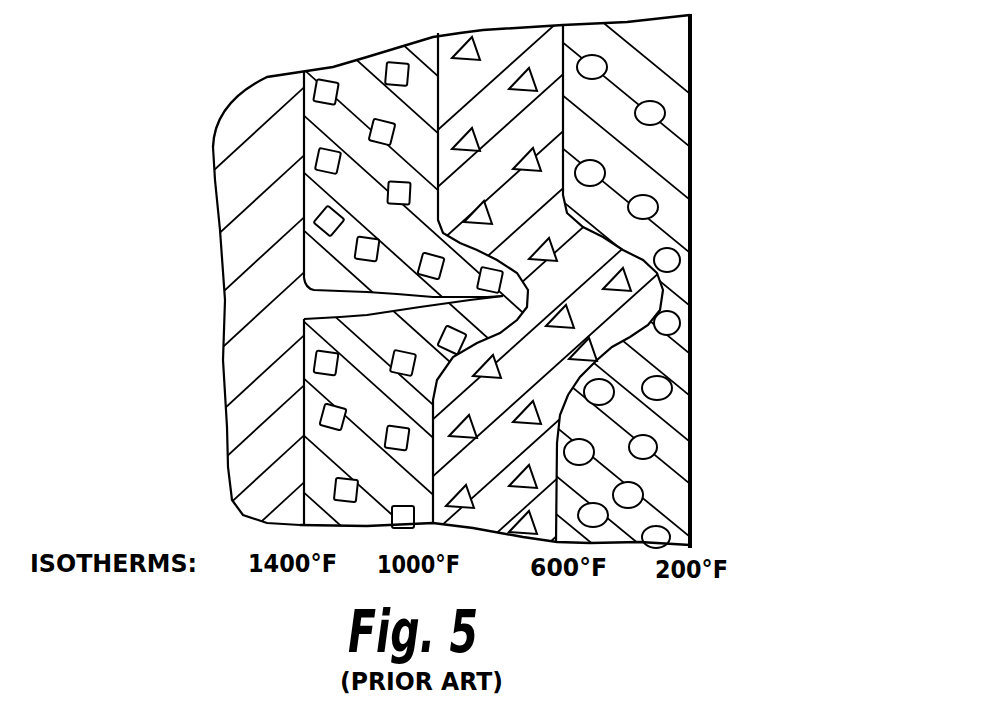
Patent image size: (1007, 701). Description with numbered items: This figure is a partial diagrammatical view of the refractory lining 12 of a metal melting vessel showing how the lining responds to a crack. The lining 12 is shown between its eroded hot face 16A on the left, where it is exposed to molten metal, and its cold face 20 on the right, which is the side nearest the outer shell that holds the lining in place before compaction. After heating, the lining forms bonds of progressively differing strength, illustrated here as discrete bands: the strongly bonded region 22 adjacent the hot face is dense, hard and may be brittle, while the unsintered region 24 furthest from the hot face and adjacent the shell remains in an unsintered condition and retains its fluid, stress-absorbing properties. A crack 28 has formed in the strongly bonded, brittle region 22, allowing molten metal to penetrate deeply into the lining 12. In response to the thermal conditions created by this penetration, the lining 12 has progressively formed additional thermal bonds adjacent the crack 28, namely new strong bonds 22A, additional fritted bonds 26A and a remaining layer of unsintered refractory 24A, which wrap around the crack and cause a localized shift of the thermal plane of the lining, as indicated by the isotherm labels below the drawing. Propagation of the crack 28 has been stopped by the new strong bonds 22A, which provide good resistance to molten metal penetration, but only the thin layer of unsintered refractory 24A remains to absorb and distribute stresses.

The refractory lining 12 is at (300, 208).
The new hot face 16A is at (304, 153).
The cold face 20 is at (692, 230).
The strongly bonded region 22 is at (333, 482).
The new strong bonds 22A is at (498, 299).
The unsintered region 24 is at (663, 510).
The thin layer of unsintered refractory 24A is at (678, 282).
The additional fritted bonds 26A is at (605, 330).
The crack 28 is at (320, 300).